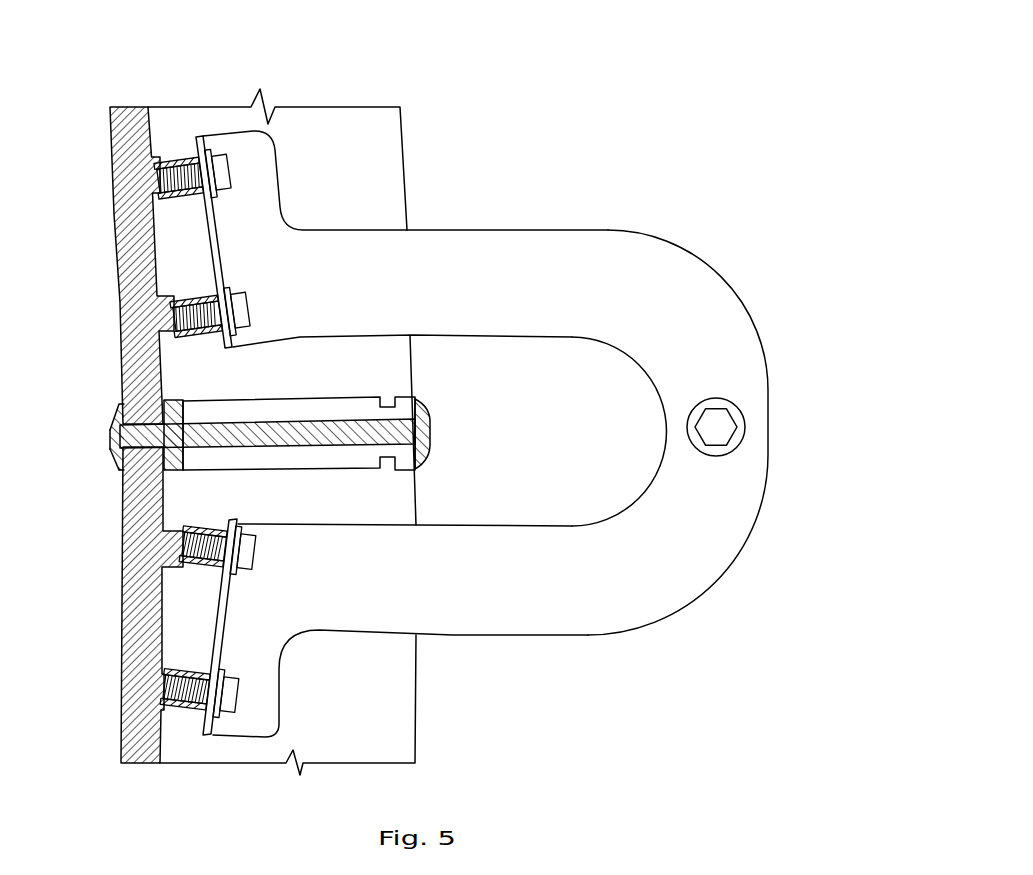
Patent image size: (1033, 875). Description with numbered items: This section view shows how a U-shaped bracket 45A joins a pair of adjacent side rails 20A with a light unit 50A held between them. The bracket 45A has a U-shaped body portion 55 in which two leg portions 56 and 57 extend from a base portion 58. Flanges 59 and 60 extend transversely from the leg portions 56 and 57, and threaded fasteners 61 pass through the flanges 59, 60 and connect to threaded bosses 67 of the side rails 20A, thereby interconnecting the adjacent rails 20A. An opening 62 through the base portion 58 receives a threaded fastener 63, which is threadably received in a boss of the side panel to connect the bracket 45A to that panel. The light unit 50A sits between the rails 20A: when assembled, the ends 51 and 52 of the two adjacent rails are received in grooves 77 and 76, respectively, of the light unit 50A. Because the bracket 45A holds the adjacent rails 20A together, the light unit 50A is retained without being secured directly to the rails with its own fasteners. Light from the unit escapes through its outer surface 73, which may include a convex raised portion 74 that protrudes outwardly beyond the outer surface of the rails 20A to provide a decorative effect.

The side rails 20A is at (111, 212).
The U-shaped bracket 45A is at (497, 434).
The light unit 50A is at (411, 412).
The end of rail 51 is at (146, 447).
The end of rail 52 is at (89, 439).
The U-shaped body portion 55 is at (492, 434).
The leg portion 56 is at (467, 243).
The leg portion 57 is at (485, 618).
The base portion 58 is at (728, 531).
The flange 59 is at (216, 238).
The flange 60 is at (226, 610).
The threaded fasteners 61 is at (226, 166).
The opening 62 is at (739, 353).
The threaded fastener 63 is at (715, 407).
The threaded bosses 67 is at (172, 158).
The outer surface 73 is at (114, 460).
The convex raised portion 74 is at (106, 435).
The groove 76 is at (117, 403).
The groove 77 is at (120, 468).